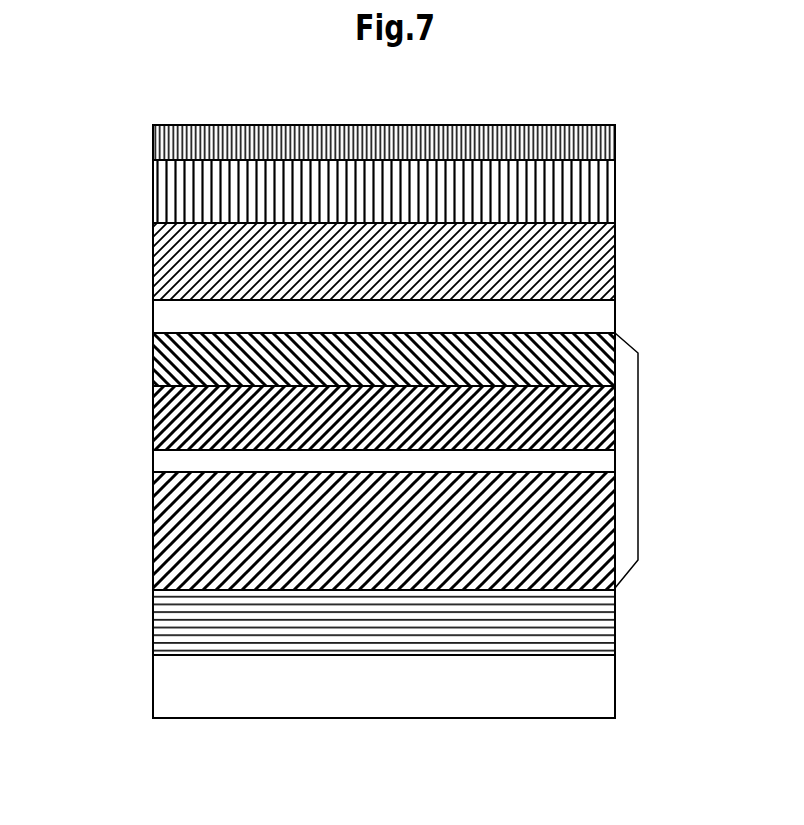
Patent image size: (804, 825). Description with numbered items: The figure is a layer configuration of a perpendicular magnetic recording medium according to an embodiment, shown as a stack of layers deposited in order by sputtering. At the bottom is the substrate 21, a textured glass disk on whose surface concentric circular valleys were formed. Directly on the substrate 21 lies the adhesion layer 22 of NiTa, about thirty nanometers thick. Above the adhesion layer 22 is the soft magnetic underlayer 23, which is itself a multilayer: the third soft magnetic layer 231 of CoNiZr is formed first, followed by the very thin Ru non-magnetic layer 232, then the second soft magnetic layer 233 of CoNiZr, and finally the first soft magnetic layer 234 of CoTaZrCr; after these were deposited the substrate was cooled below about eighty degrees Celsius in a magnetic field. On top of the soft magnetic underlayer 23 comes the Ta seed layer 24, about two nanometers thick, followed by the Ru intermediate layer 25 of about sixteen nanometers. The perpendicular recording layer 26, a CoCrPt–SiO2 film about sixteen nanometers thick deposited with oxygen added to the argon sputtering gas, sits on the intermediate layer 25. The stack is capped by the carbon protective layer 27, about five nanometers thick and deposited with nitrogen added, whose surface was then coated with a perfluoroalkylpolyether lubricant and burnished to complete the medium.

The substrate 21 is at (580, 698).
The adhesion layer 22 is at (580, 632).
The soft magnetic underlayer 23 is at (638, 470).
The third soft magnetic layer 231 is at (170, 540).
The non-magnetic layer 232 is at (173, 462).
The second soft magnetic layer 233 is at (173, 417).
The first soft magnetic layer 234 is at (153, 350).
The seed layer 24 is at (582, 320).
The intermediate layer 25 is at (583, 257).
The perpendicular recording layer 26 is at (593, 203).
The protective layer 27 is at (593, 147).